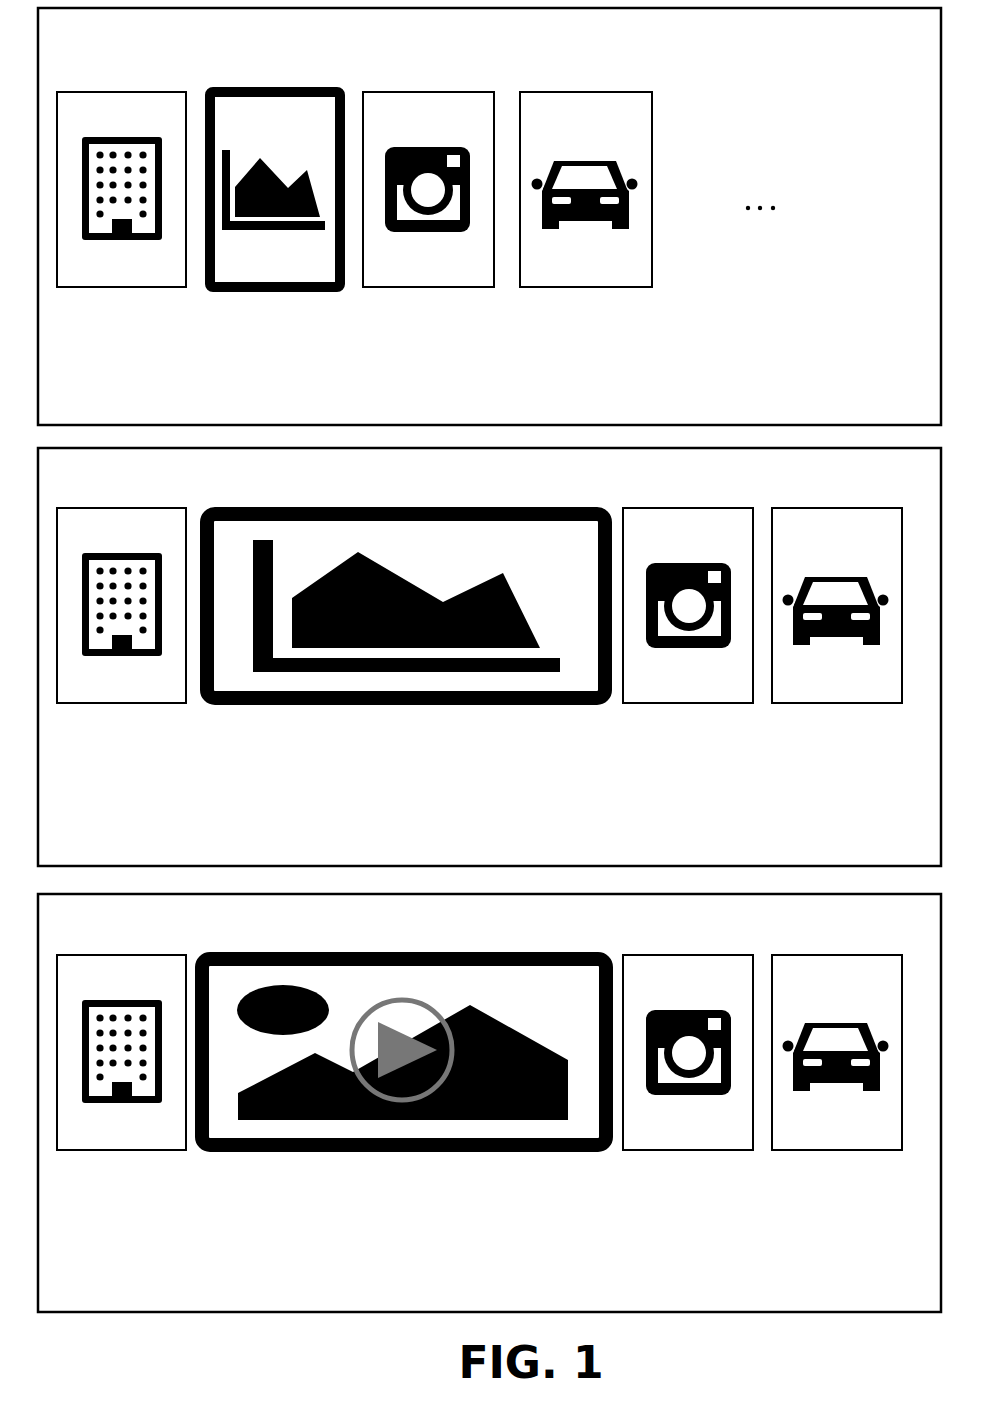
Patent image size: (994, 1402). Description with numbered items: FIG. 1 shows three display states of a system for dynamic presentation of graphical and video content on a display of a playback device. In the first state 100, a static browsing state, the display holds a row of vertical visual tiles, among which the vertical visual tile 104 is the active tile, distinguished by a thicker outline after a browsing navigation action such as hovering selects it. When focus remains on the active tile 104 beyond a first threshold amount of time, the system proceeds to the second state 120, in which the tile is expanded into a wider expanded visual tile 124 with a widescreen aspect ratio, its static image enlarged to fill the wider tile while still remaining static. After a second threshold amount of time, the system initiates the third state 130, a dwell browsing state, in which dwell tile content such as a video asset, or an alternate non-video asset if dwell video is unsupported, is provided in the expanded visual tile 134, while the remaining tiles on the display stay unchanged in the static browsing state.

The first state 100 is at (489, 216).
The vertical visual tile 104 is at (256, 275).
The second state 120 is at (489, 657).
The expanded visual tile 124 is at (521, 560).
The third state 130 is at (489, 1103).
The expanded visual tile 134 is at (536, 1003).